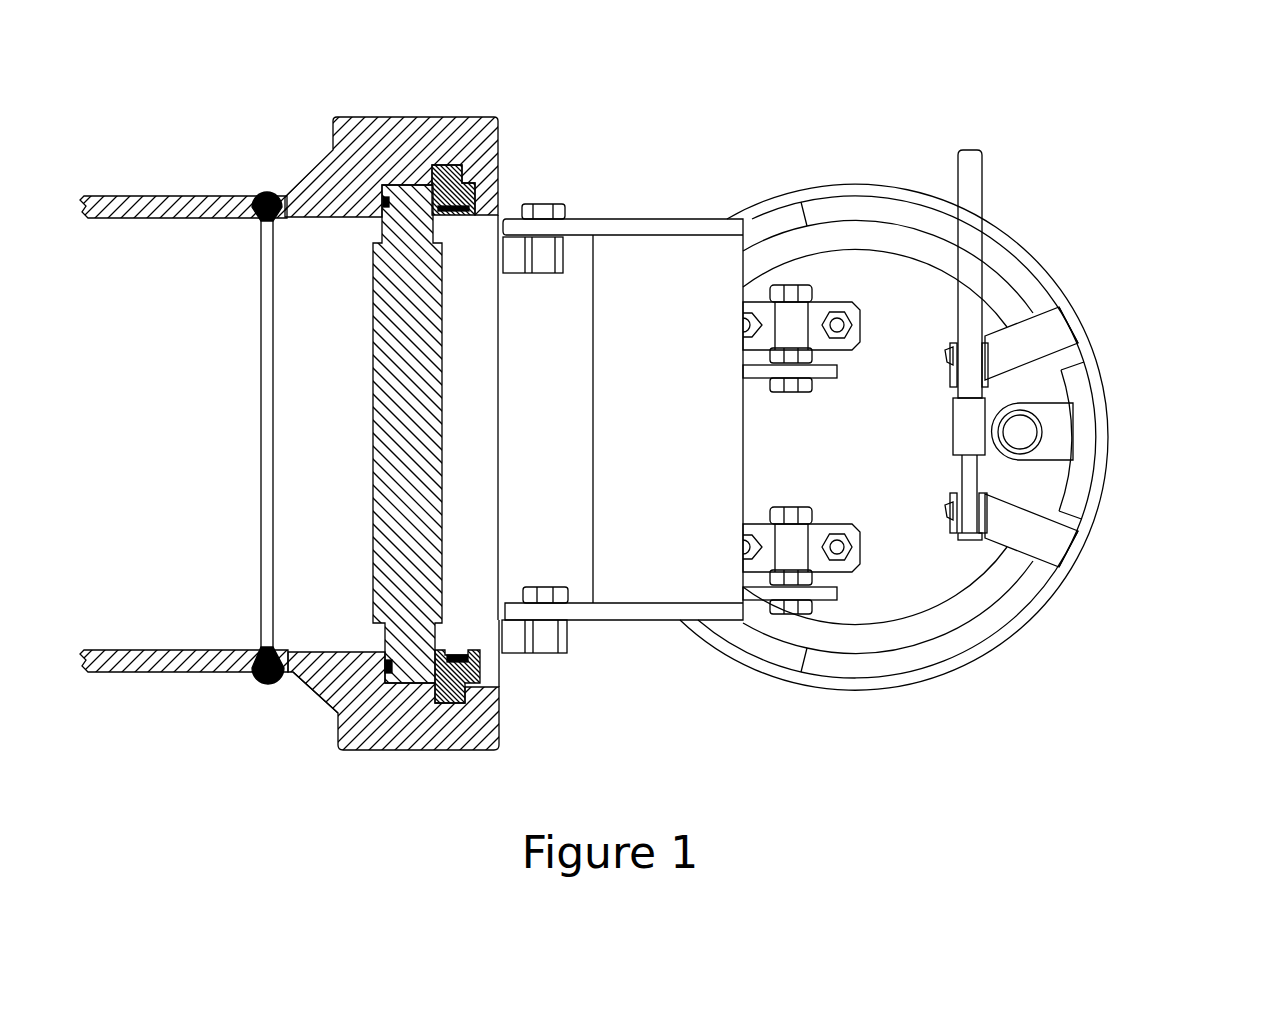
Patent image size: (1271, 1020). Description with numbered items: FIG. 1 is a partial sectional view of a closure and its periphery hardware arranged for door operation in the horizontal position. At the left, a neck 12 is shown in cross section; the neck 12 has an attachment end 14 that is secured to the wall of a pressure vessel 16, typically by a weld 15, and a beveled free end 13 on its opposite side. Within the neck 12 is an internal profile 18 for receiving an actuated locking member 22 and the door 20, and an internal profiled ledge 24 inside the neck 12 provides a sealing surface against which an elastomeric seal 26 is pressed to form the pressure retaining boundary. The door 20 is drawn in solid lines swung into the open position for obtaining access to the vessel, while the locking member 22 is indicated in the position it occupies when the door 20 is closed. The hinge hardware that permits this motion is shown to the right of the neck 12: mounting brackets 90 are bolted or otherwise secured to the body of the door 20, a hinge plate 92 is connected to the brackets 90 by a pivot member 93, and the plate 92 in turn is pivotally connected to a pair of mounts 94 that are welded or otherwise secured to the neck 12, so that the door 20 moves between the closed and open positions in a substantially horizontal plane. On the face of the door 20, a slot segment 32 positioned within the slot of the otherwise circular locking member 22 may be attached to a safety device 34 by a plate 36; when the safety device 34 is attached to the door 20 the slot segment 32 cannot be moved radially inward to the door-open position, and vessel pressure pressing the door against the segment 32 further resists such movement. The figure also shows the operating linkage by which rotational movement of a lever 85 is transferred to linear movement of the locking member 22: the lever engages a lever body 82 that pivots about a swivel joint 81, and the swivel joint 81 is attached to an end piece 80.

The neck 12 is at (405, 117).
The beveled free end 13 is at (500, 135).
The attachment end 14 is at (282, 200).
The weld 15 is at (262, 190).
The pressure vessel 16 is at (157, 200).
The internal profile 18 is at (490, 667).
The door 20 is at (410, 428).
The locking member 22 is at (470, 187).
The internal profiled ledge 24 is at (323, 690).
The elastomeric seal 26 is at (337, 716).
The slot segment 32 is at (1085, 386).
The safety device 34 is at (1027, 438).
The plate 36 is at (1055, 438).
The end piece 80 is at (1057, 336).
The swivel joint 81 is at (1055, 337).
The lever body 82 is at (1082, 387).
The lever 85 is at (982, 180).
The mounting brackets 90 is at (837, 305).
The hinge plate 92 is at (678, 275).
The pivot member 93 is at (800, 305).
The mounts 94 is at (547, 258).